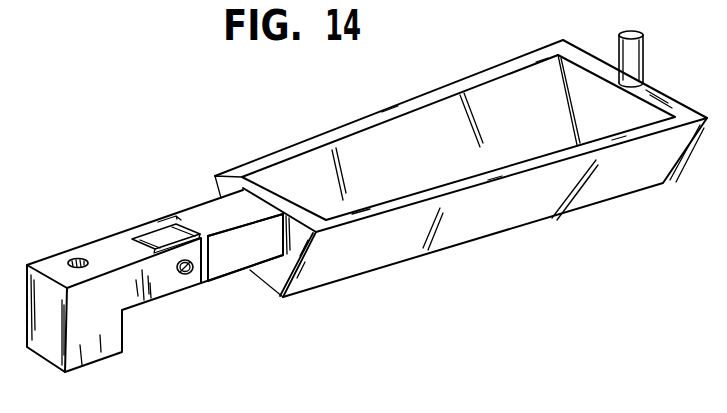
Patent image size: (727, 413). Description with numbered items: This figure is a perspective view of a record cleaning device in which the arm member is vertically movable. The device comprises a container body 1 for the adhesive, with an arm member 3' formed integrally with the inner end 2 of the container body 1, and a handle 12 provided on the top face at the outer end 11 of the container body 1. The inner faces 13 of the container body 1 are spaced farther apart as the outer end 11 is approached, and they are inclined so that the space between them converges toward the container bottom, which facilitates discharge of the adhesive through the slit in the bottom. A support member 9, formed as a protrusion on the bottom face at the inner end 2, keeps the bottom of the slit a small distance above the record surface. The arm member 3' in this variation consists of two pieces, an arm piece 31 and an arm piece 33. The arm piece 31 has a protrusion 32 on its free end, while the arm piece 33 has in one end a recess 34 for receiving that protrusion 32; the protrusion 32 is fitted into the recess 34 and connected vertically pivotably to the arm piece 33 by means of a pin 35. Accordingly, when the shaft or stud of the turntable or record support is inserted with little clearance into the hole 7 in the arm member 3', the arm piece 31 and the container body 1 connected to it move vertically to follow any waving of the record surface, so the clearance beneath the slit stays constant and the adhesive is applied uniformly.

The container body 1 is at (336, 124).
The inner end of the container 2 is at (277, 268).
The arm member 3' is at (155, 264).
The hole 7 is at (68, 262).
The support member 9 is at (105, 332).
The outer end of the container 11 is at (660, 95).
The handle 12 is at (625, 48).
The inner faces of the container 13 is at (431, 95).
The arm piece 31 is at (243, 255).
The protrusion 32 is at (178, 232).
The arm piece 33 is at (153, 286).
The recess 34 is at (161, 222).
The pin 35 is at (188, 276).